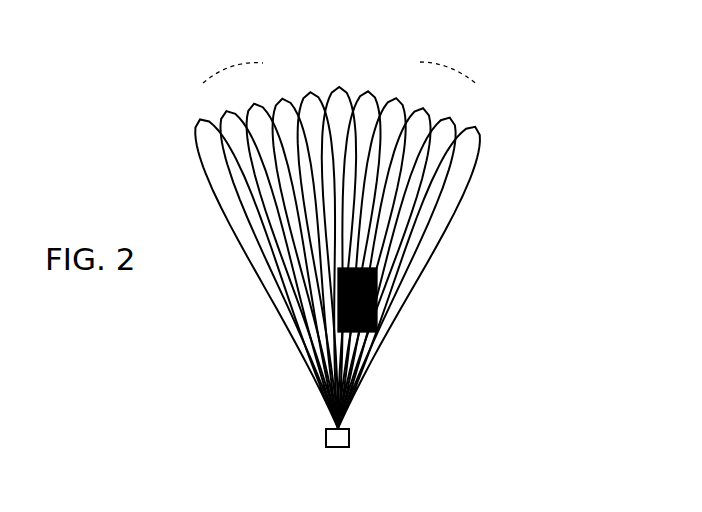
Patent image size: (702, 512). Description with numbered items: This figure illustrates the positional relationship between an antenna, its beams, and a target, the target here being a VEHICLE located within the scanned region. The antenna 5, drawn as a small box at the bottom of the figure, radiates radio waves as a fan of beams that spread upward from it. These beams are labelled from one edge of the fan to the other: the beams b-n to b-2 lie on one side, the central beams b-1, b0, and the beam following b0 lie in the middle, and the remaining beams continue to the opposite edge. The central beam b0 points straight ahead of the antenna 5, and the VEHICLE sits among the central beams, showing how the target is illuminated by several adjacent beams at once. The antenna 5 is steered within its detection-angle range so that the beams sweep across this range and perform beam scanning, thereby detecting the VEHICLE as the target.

The antenna 5 is at (349, 438).
The beam b−n b-n is at (200, 119).
The beam b−2 b-2 is at (282, 101).
The beam b−1 b-1 is at (307, 94).
The beam b0 is at (339, 87).
The vehicle VEHICLE is at (377, 302).